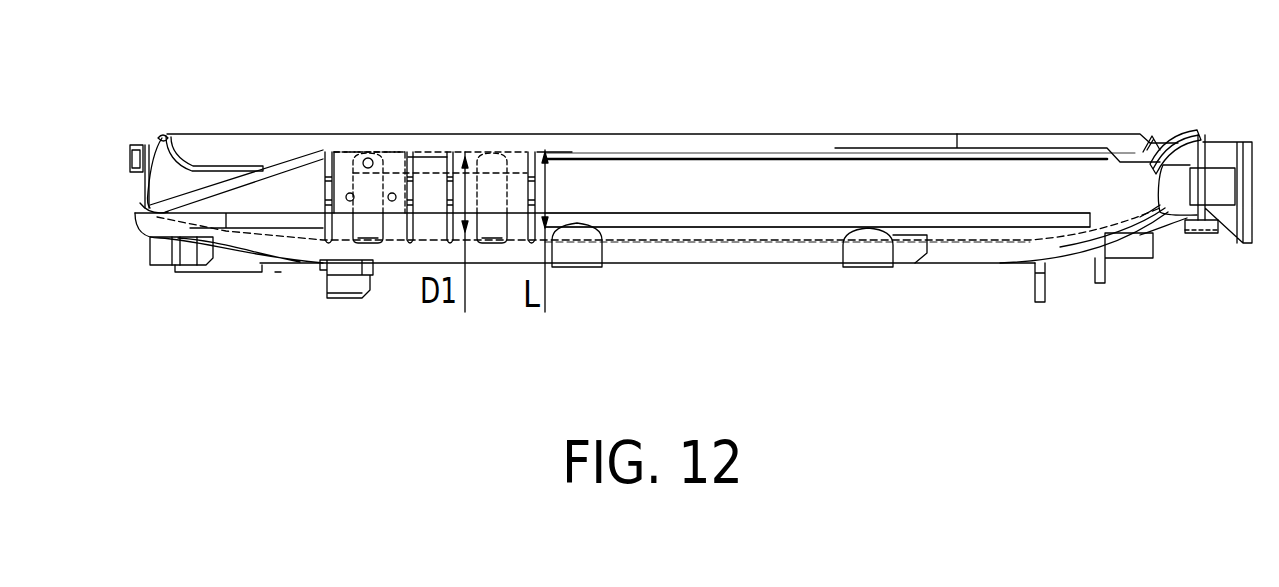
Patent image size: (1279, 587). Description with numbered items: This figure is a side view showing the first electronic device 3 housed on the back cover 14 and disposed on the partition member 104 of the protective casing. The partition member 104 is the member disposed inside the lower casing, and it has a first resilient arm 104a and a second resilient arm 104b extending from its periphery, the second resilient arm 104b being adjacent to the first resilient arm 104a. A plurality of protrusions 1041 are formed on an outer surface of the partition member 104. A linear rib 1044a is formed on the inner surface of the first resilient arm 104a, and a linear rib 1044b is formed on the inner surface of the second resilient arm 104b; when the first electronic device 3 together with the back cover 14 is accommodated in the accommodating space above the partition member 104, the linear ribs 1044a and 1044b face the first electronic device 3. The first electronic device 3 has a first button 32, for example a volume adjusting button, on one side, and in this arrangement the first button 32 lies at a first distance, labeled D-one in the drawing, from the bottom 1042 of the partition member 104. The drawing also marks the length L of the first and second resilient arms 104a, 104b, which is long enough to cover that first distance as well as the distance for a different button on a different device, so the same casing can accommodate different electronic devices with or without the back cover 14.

The back cover 14 is at (160, 137).
The first resilient arm 104a is at (341, 150).
The protrusions 1041 is at (368, 150).
The linear rib 1044a is at (386, 188).
The linear rib 1044b is at (510, 188).
The first button 32 is at (469, 156).
The second resilient arm 104b is at (529, 152).
The first electronic device 3 is at (1041, 133).
The bottom 1042 is at (748, 243).
The partition member 104 is at (685, 265).